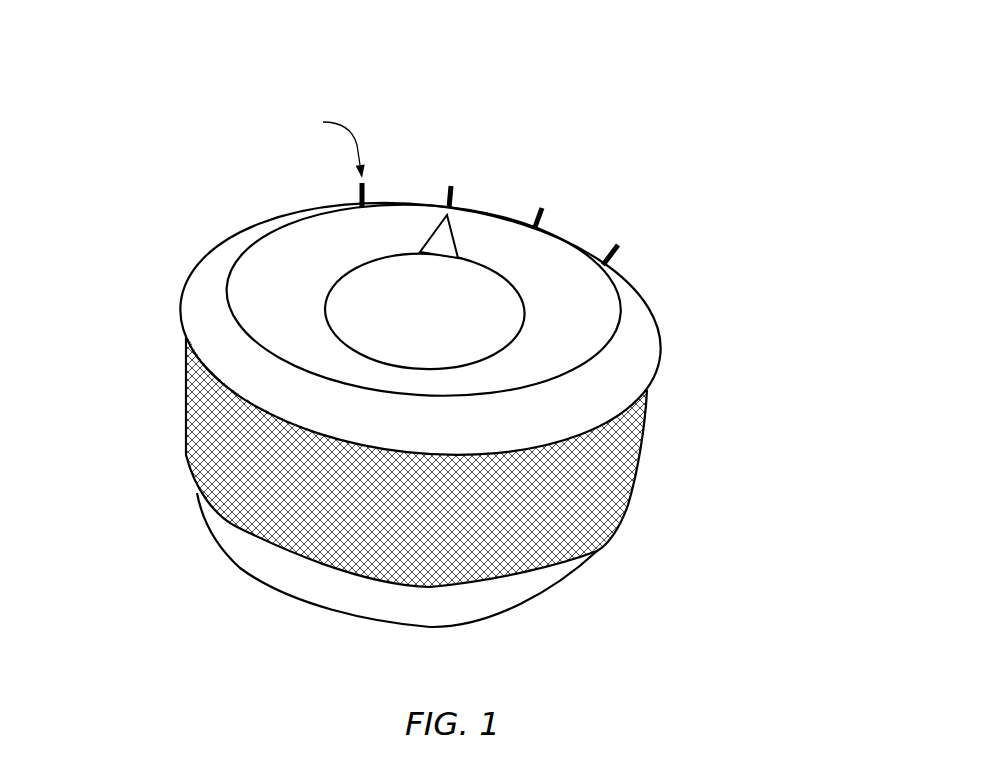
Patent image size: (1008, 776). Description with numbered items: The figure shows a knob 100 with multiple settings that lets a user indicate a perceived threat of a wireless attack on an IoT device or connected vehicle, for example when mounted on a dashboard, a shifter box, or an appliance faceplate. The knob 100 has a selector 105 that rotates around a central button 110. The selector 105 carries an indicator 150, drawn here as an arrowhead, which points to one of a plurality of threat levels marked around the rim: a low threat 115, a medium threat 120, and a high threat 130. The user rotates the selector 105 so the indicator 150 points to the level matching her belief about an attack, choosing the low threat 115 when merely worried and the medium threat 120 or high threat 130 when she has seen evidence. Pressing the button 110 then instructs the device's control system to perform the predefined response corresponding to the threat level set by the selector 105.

The knob 100 is at (396, 72).
The selector 105 is at (294, 598).
The button 110 is at (522, 331).
The low threat 115 is at (450, 165).
The medium threat 120 is at (554, 194).
The high threat 130 is at (635, 246).
The indicator 150 is at (427, 243).